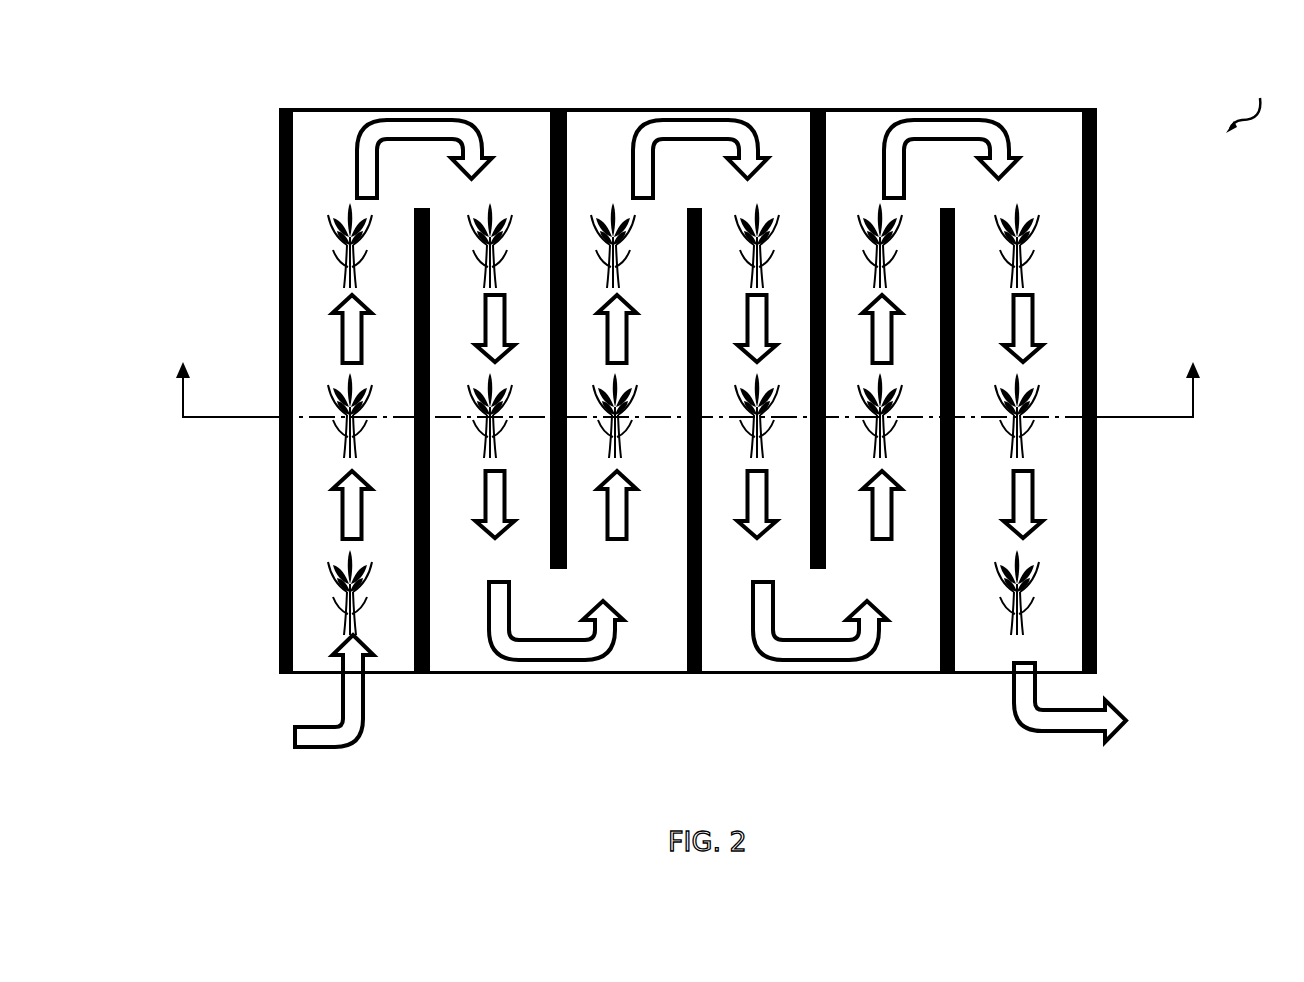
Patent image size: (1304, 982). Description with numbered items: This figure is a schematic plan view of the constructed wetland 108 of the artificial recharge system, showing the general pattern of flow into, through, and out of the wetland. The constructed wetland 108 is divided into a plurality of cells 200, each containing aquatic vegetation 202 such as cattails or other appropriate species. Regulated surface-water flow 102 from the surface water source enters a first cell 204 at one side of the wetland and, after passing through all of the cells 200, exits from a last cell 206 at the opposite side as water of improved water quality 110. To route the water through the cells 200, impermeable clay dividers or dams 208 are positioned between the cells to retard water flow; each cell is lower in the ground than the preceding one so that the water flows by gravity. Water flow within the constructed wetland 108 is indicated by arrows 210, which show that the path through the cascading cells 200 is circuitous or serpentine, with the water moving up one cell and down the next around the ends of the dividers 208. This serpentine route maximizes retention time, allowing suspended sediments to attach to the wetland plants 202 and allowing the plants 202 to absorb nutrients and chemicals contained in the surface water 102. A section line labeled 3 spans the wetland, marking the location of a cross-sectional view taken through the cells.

The water flow 102 is at (325, 748).
The constructed wetland 108 is at (1253, 103).
The water of improved water quality 110 is at (1040, 730).
The cells 200 is at (385, 662).
The aquatic vegetation 202 is at (335, 242).
The first cell 204 is at (303, 615).
The last cell 206 is at (1073, 615).
The impermeable clay dividers or dams 208 is at (278, 138).
The arrows indicating water flow 210 is at (419, 127).
The section line 3- 3 is at (688, 379).